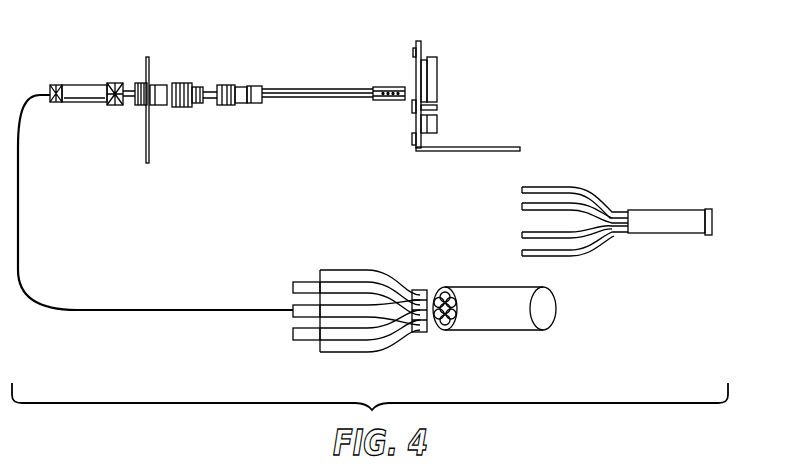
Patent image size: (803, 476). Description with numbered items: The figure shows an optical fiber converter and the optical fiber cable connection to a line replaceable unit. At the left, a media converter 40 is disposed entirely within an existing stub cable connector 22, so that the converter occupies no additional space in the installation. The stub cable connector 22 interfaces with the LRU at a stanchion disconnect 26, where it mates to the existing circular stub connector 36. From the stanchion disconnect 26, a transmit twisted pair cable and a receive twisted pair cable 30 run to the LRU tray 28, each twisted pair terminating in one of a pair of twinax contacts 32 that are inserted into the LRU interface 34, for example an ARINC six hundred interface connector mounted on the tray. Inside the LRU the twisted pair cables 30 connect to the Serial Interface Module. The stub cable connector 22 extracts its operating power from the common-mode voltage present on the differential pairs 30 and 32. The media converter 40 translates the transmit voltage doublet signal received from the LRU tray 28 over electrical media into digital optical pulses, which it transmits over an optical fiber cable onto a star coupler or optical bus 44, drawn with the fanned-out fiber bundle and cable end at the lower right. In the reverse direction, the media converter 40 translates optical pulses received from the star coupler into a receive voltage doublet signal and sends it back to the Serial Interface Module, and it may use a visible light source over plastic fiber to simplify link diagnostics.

The media converter 40 is at (81, 62).
The stub cable connector 22 is at (101, 83).
The stanchion disconnect 26 is at (149, 140).
The circular stub connector 36 is at (181, 83).
The twisted pair cable 30 is at (297, 103).
The twinax contact 32 is at (397, 86).
The LRU tray 28 is at (508, 152).
The LRU interface 34 is at (432, 73).
The optical bus 44 is at (510, 209).